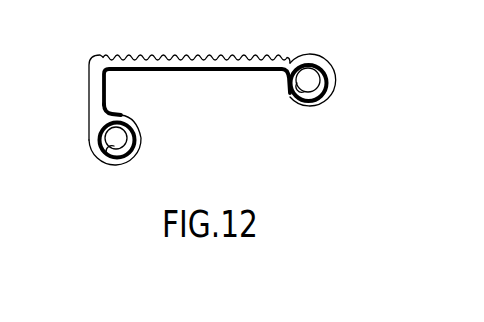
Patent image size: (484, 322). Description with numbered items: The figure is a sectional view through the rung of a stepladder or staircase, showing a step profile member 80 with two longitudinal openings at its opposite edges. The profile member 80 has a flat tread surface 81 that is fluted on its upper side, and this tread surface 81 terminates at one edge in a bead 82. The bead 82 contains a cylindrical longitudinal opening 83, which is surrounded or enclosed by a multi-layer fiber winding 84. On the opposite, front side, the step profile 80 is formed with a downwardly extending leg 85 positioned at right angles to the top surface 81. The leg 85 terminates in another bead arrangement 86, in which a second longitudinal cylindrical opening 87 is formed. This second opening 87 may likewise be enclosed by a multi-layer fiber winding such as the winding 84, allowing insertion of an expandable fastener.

The profile member 80 is at (187, 72).
The flat tread surface 81 is at (198, 60).
The bead 82 is at (326, 79).
The cylindrical longitudinal opening 83 is at (298, 88).
The multi-layer fiber winding 84 is at (321, 92).
The downwardly extending leg 85 is at (95, 103).
The bead arrangement 86 is at (135, 137).
The second longitudinal cylindrical opening 87 is at (108, 152).